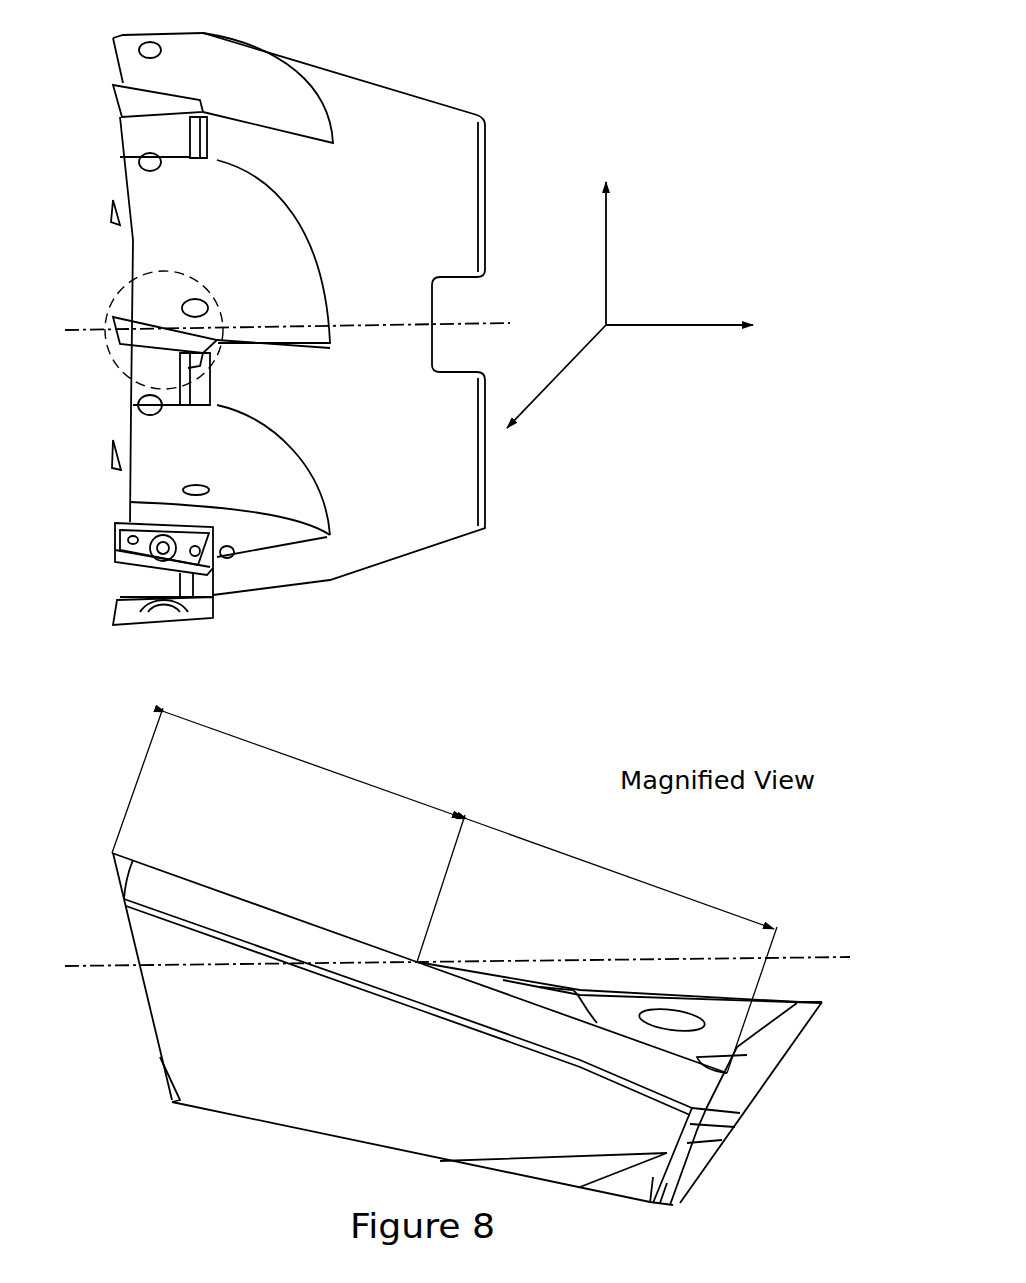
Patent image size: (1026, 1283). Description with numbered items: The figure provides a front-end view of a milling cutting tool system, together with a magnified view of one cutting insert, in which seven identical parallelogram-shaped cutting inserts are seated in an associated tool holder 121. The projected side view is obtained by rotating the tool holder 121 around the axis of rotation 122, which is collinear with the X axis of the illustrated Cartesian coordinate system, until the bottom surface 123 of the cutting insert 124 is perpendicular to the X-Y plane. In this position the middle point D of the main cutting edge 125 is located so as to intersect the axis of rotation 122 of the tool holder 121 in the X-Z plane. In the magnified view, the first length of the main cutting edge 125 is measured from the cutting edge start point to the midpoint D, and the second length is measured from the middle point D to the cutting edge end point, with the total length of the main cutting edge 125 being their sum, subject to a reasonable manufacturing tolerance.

The tool holder 121 is at (398, 146).
The axis of rotation 122 is at (483, 323).
The bottom surface 123 is at (145, 358).
The cutting insert 124 is at (135, 339).
The main cutting edge 125 is at (133, 321).